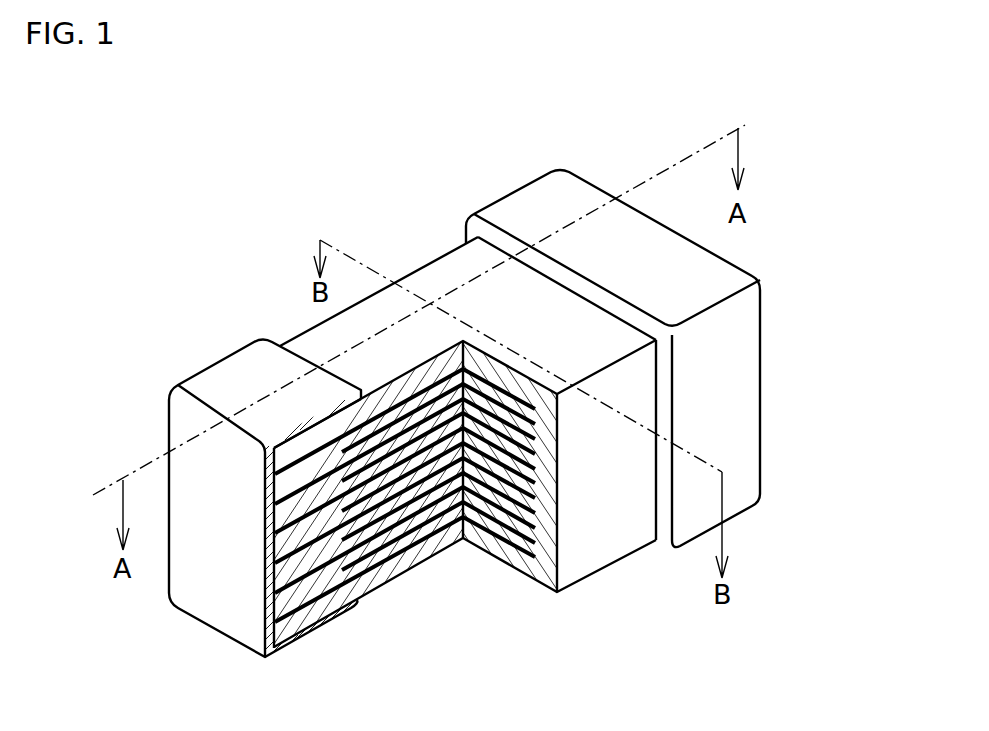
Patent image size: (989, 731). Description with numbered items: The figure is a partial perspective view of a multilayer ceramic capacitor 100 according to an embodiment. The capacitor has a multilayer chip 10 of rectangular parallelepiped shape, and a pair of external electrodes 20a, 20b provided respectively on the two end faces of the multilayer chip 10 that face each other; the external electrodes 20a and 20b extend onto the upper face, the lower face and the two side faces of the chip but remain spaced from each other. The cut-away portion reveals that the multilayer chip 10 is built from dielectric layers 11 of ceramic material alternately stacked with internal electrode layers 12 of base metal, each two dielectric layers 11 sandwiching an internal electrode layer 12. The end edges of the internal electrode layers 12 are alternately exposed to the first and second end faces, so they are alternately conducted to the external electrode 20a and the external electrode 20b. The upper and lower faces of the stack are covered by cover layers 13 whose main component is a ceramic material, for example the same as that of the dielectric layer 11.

The multilayer ceramic capacitor 100 is at (861, 104).
The multilayer chip 10 is at (304, 331).
The dielectric layer 11 is at (383, 548).
The internal electrode layer 12 is at (418, 523).
The cover layer 13 is at (433, 279).
The external electrode 20a is at (193, 374).
The external electrode 20b is at (518, 210).